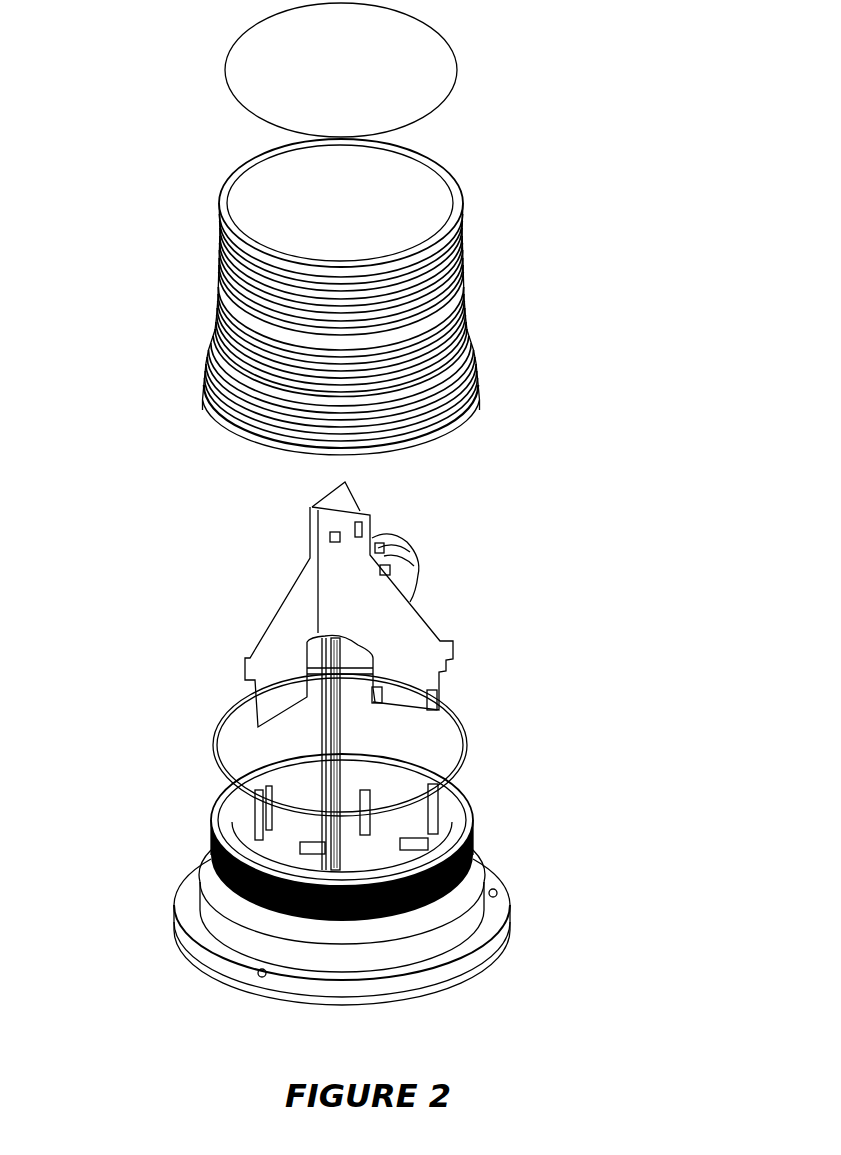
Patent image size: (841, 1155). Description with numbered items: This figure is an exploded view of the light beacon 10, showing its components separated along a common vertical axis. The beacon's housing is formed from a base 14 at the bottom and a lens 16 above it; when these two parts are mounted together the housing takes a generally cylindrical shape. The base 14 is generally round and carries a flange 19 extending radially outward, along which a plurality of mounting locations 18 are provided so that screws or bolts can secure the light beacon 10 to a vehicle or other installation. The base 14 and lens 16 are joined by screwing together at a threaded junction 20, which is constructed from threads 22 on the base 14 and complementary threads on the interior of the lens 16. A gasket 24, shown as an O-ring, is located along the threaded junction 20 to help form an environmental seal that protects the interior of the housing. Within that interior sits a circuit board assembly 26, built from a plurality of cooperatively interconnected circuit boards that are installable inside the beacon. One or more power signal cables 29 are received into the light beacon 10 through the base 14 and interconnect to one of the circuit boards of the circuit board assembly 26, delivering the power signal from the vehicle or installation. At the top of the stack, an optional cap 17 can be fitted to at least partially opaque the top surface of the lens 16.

The light beacon 10 is at (86, 1010).
The base 14 is at (480, 865).
The lens 16 is at (462, 323).
The cap 17 is at (428, 57).
The mounting locations 18 is at (258, 976).
The flange 19 is at (470, 966).
The threaded junction 20 is at (183, 813).
The threads 22 is at (470, 825).
The gasket 24 is at (463, 737).
The circuit board assembly 26 is at (215, 657).
The power signal cables 29 is at (412, 560).